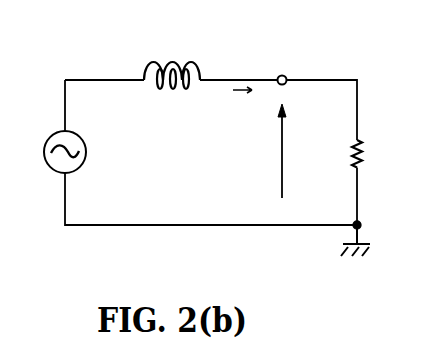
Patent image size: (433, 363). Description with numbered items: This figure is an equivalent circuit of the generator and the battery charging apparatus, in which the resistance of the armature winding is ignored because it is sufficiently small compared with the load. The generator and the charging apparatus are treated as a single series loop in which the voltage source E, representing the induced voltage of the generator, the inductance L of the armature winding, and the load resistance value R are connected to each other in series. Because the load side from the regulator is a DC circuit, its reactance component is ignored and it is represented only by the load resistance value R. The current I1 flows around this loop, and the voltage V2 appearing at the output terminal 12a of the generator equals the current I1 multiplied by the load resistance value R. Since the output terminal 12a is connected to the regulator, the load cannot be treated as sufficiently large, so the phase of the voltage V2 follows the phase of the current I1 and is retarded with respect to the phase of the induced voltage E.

The output terminal 12a is at (286, 76).
The inductance L is at (172, 63).
The induced voltage E is at (56, 152).
The load resistance value R is at (366, 154).
The current I1 is at (242, 103).
The voltage of the output terminal V2 is at (295, 151).